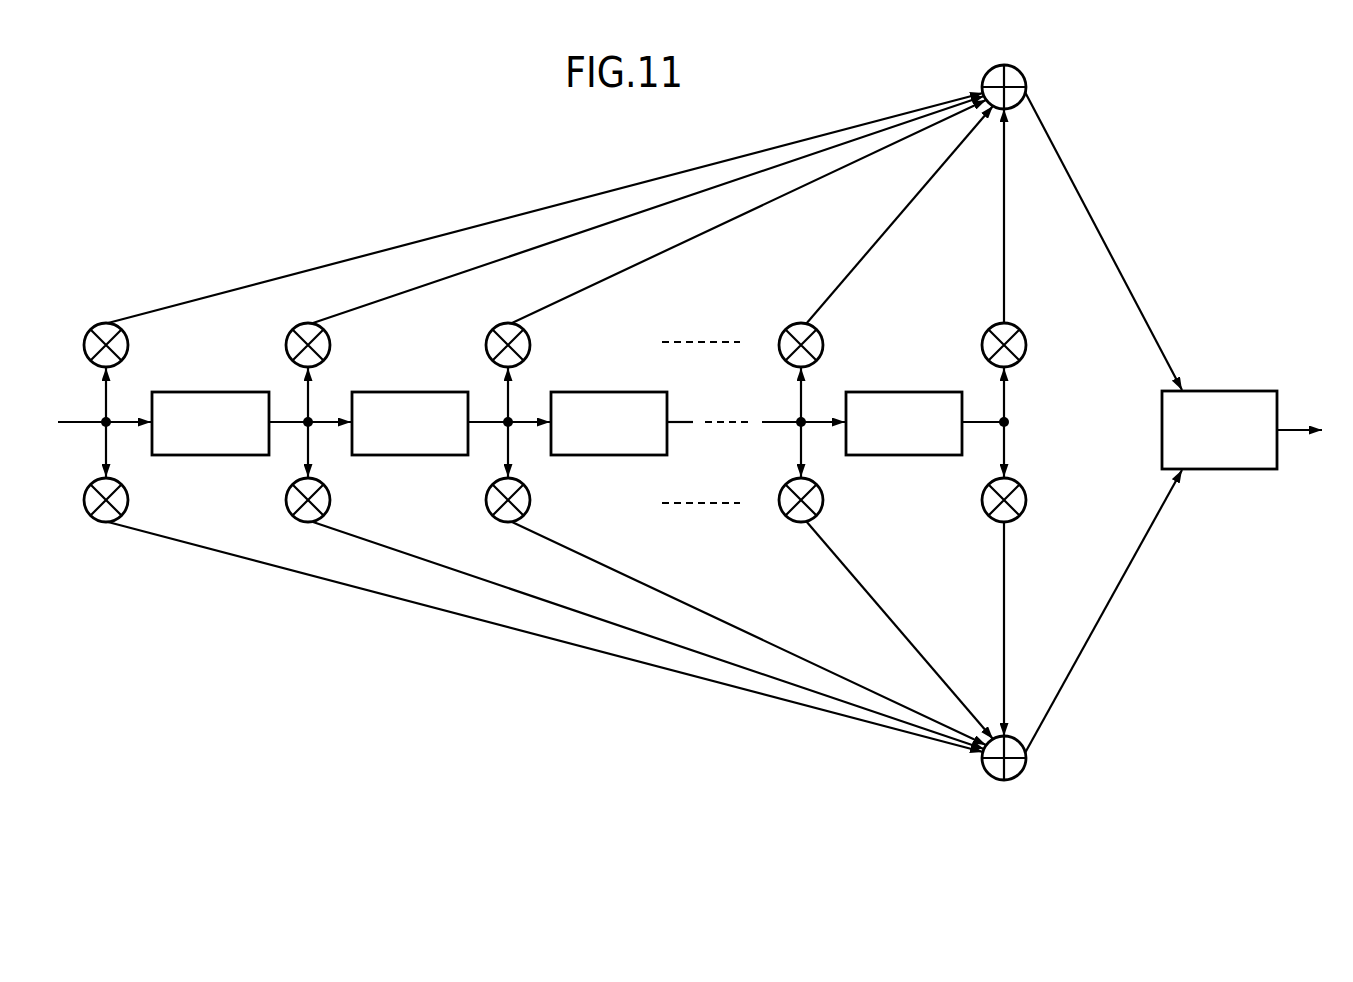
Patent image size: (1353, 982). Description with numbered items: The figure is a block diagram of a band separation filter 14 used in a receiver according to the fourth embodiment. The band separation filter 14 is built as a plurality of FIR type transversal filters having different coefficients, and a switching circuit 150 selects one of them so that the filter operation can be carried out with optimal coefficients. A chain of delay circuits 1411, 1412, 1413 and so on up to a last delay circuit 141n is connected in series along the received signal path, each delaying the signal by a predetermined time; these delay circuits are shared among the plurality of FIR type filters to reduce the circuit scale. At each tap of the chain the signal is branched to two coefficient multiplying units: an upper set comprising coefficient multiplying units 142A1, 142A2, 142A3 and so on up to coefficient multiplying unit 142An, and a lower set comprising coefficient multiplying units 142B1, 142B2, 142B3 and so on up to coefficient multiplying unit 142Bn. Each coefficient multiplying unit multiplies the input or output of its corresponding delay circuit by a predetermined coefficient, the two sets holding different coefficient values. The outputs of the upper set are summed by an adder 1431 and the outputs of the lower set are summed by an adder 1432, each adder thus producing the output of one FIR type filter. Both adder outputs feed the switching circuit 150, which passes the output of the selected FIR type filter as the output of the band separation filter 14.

The band separation filter 14 is at (601, 757).
The delay circuit 1411 is at (228, 392).
The delay circuit 1412 is at (428, 392).
The delay circuit 1413 is at (627, 392).
The delay circuit 141n is at (922, 392).
The coefficient multiplying unit 142A1 is at (128, 347).
The coefficient multiplying unit 142A2 is at (330, 347).
The coefficient multiplying unit 142A3 is at (530, 347).
The coefficient multiplying unit 142An is at (1026, 347).
The coefficient multiplying unit 142B1 is at (128, 502).
The coefficient multiplying unit 142B2 is at (330, 502).
The coefficient multiplying unit 142B3 is at (530, 502).
The coefficient multiplying unit 142Bn is at (1026, 502).
The adder 1431 is at (1021, 72).
The adder 1432 is at (1018, 777).
The switching circuit 150 is at (1239, 391).